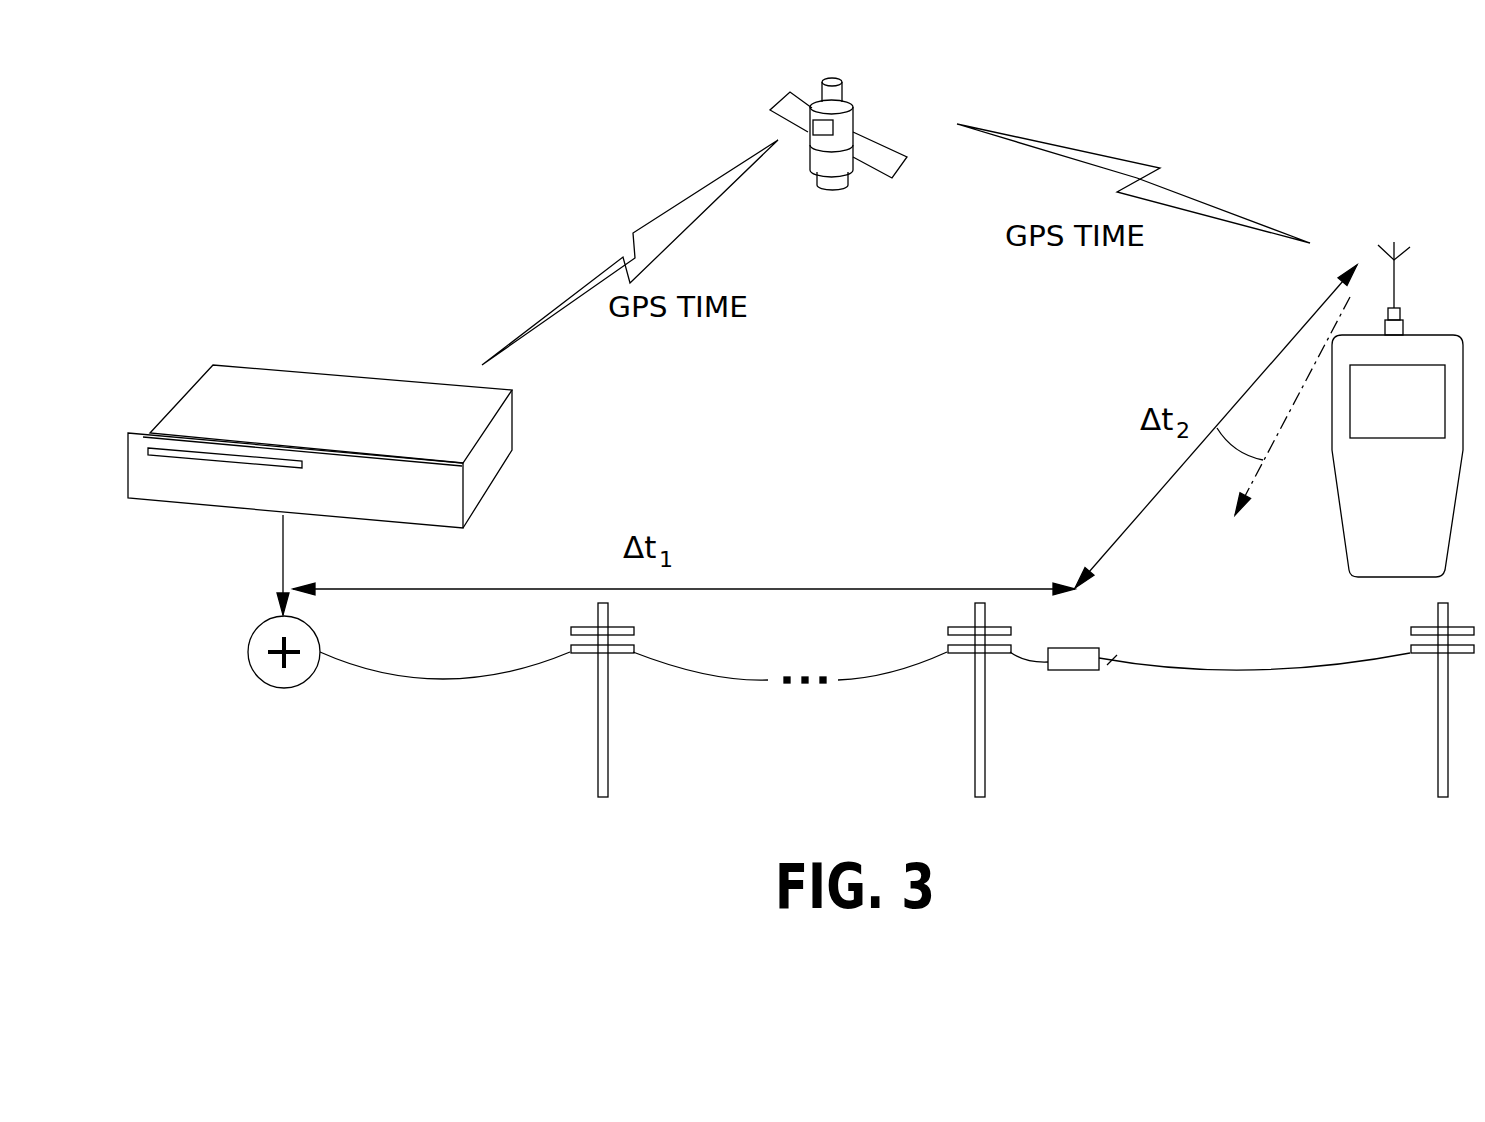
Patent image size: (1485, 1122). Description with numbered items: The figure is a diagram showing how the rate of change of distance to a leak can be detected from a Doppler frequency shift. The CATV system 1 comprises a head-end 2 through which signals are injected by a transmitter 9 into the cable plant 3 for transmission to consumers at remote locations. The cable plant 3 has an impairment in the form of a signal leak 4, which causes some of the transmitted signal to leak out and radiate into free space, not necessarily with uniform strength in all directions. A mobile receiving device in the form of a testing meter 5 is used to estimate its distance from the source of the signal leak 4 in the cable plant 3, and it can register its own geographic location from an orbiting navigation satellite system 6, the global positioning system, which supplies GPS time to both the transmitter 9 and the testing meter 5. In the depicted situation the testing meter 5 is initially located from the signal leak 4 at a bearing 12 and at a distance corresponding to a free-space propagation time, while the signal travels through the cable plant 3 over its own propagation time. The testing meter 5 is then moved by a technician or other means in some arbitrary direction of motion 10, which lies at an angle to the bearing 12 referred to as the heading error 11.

The CATV system 1 is at (413, 187).
The head-end 2 is at (283, 690).
The cable plant 3 is at (708, 698).
The signal leak 4 is at (1073, 670).
The testing meter 5 is at (1427, 335).
The navigation satellite system 6 is at (770, 110).
The transmitter 9 is at (363, 375).
The direction of motion 10 is at (1277, 433).
The heading error 11 is at (1248, 430).
The bearing 12 is at (1132, 522).